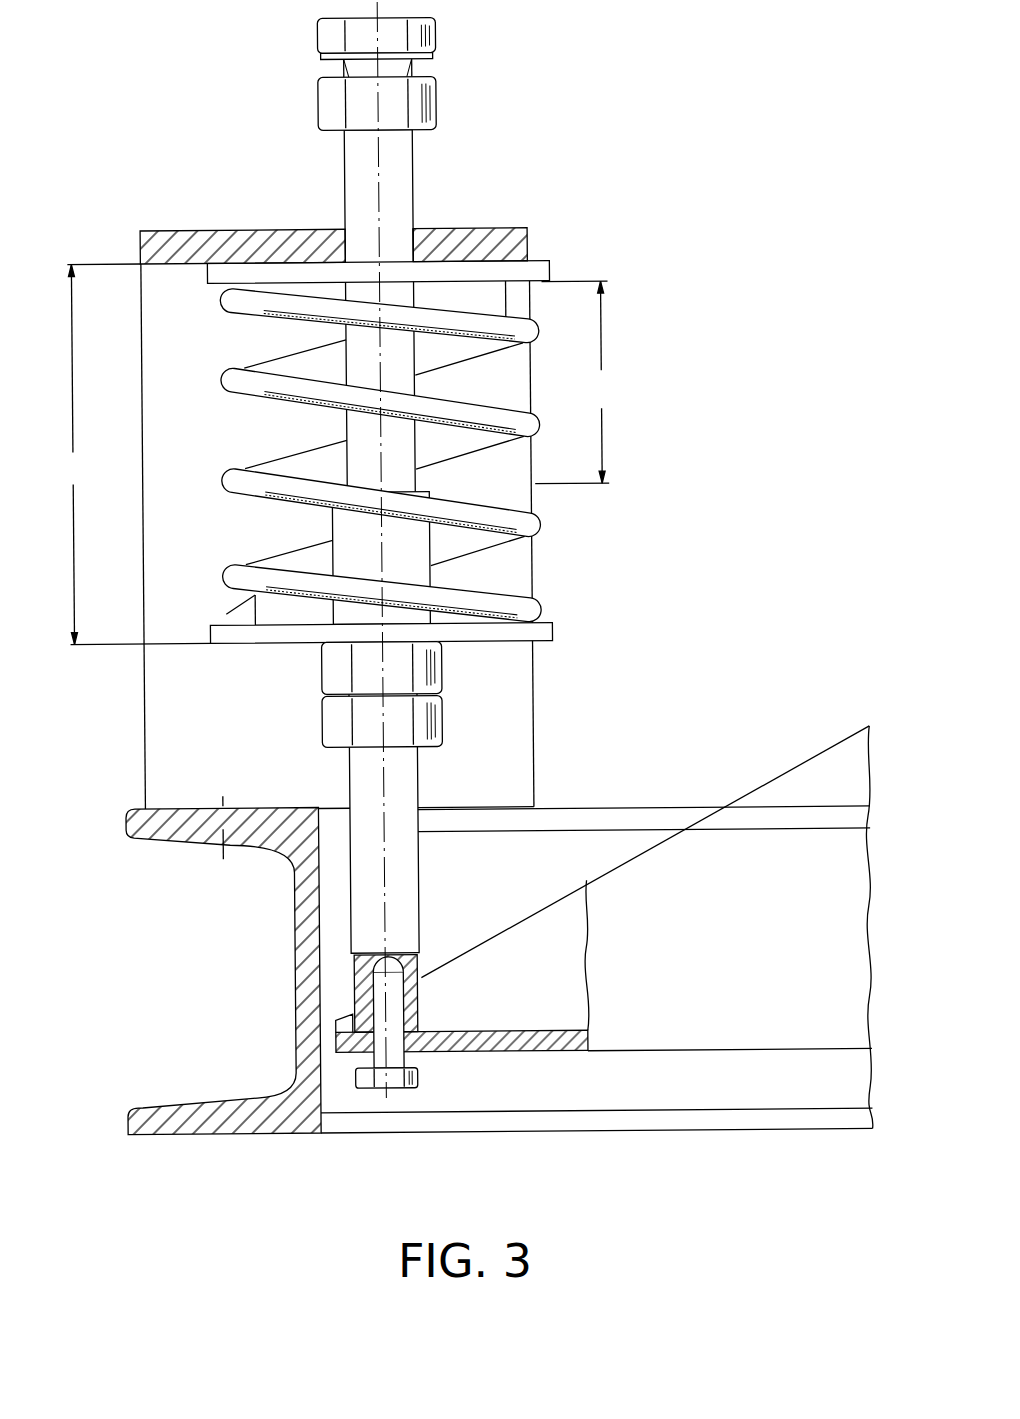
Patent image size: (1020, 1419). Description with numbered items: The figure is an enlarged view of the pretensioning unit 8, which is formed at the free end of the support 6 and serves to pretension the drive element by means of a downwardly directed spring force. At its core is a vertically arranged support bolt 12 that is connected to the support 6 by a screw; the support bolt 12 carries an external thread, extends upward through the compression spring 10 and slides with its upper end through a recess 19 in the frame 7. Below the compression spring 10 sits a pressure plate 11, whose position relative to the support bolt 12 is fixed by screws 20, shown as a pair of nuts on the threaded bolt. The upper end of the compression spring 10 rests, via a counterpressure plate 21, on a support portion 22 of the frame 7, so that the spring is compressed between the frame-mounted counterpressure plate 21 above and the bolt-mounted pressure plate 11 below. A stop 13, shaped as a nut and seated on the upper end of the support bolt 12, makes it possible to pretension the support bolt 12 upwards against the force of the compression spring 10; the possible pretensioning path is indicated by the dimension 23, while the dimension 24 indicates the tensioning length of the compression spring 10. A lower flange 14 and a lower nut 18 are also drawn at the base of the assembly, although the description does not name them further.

The support 6 is at (557, 1040).
The frame 7 is at (328, 676).
The pretensioning unit 8 is at (573, 540).
The compression spring 10 is at (536, 606).
The pressure plate 11 is at (260, 628).
The support bolt 12 is at (368, 353).
The stop 13 is at (438, 101).
The channel flange 14 is at (197, 1110).
The lower fastening nut 18 is at (411, 1090).
The recess 19 is at (416, 229).
The screws 20 is at (338, 669).
The counterpressure plate 21 is at (546, 262).
The support portion 22 is at (493, 242).
The pretensioning path 23 is at (577, 382).
The tensioning length 24 is at (135, 453).